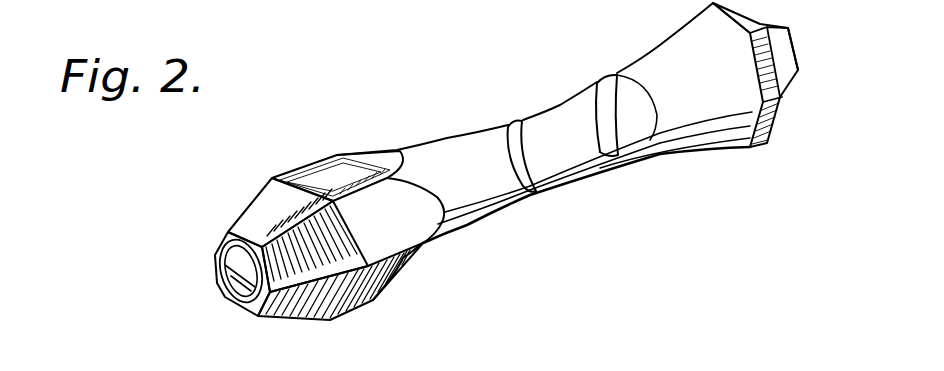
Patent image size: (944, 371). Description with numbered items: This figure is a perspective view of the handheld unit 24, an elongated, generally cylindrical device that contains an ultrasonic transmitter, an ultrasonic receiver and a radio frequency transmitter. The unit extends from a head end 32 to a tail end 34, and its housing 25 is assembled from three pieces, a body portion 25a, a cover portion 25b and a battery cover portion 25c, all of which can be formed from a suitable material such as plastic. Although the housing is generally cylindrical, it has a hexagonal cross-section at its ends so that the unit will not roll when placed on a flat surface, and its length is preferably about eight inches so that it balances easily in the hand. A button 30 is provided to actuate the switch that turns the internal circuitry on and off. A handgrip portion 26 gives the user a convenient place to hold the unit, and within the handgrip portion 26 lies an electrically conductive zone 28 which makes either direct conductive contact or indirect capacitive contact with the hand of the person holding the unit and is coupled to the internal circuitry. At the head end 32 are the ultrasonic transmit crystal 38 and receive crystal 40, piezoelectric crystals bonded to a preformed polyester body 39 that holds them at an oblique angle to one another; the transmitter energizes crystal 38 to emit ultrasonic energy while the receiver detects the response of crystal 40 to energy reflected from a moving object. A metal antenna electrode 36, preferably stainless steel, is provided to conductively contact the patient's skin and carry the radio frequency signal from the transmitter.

The handheld unit 24 is at (787, 68).
The housing 25 is at (710, 117).
The body portion 25a is at (470, 232).
The cover portion 25b is at (440, 152).
The battery cover portion 25c is at (673, 62).
The handgrip portion 26 is at (540, 117).
The electrically conductive zone 28 is at (506, 127).
The button 30 is at (320, 167).
The head end 32 is at (272, 200).
The tail end 34 is at (797, 42).
The metal antenna electrode 36 is at (263, 303).
The piezoelectric crystal 38 is at (238, 255).
The preformed polyester body 39 is at (225, 267).
The piezoelectric crystal 40 is at (243, 290).